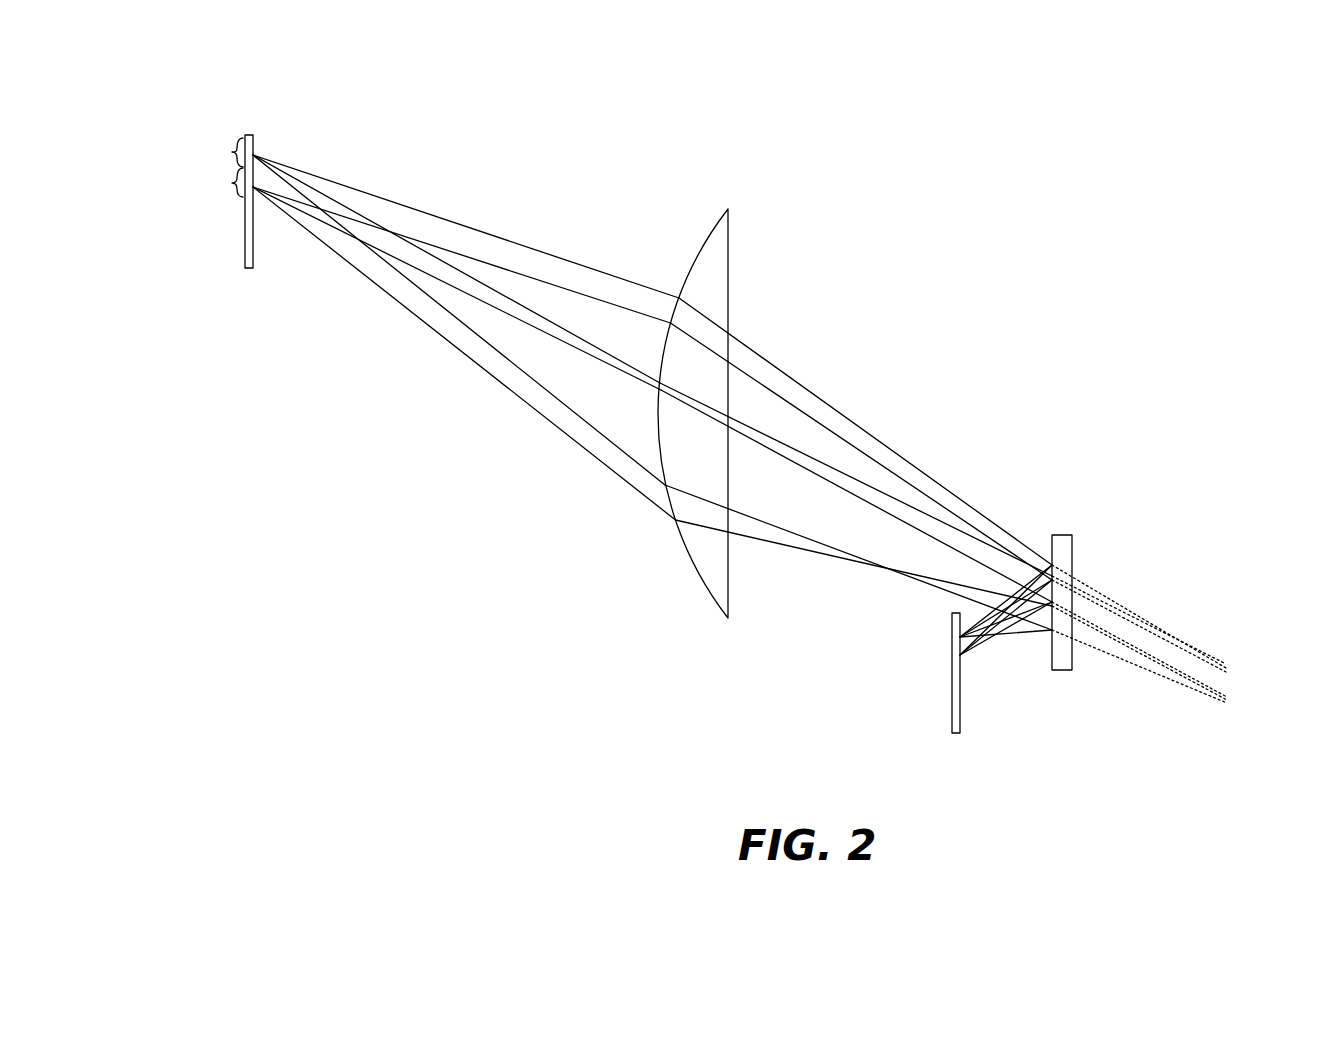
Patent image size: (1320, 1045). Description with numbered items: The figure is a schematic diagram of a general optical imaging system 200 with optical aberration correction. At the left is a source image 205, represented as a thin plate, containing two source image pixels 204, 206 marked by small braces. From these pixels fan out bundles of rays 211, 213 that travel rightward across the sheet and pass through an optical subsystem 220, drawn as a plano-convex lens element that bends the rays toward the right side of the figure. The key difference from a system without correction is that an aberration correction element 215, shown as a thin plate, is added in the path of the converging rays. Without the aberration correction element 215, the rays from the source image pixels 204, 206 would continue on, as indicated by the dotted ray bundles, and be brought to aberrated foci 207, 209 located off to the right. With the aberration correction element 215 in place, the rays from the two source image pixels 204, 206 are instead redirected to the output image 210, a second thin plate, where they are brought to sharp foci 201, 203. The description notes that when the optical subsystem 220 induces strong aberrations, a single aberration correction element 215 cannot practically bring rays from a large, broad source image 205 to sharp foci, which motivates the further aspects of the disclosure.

The optical imaging system 200 is at (768, 31).
The sharp focus 201 is at (977, 619).
The sharp focus 203 is at (977, 607).
The source image pixel 204 is at (211, 151).
The source image 205 is at (250, 131).
The source image pixel 206 is at (211, 184).
The aberrated focus 207 is at (1165, 682).
The aberrated focus 209 is at (1140, 608).
The output image 210 is at (958, 740).
The light rays from first emitter 211 is at (652, 368).
The light rays from second emitter 213 is at (652, 396).
The aberration correction element 215 is at (1070, 523).
The optical subsystem 220 is at (738, 216).